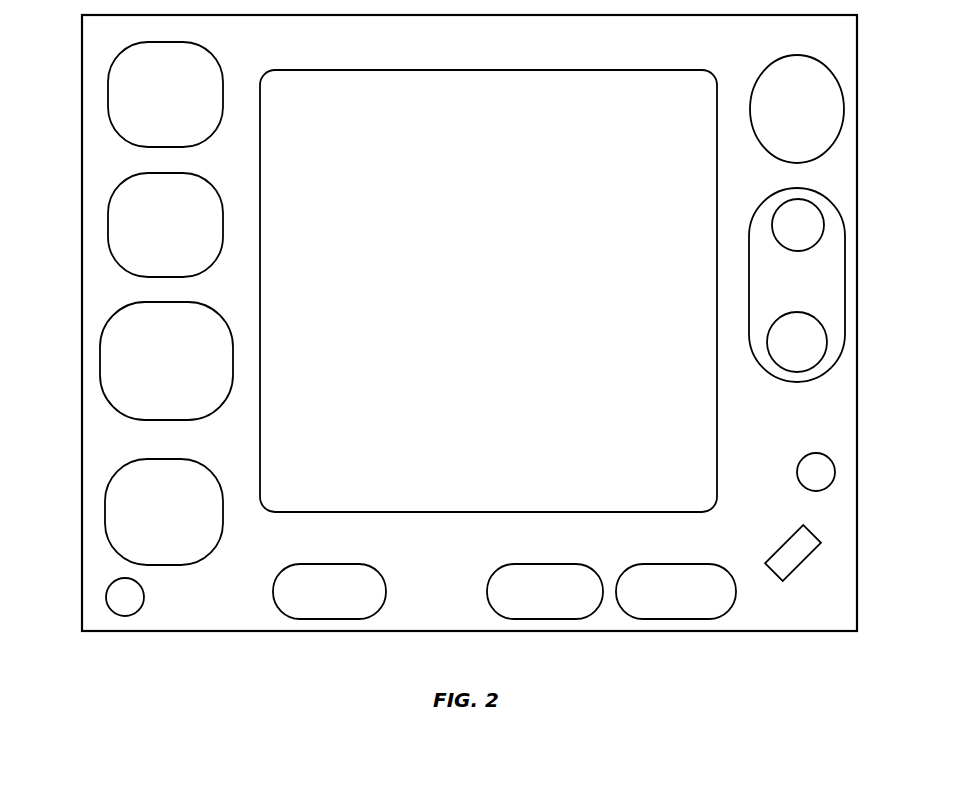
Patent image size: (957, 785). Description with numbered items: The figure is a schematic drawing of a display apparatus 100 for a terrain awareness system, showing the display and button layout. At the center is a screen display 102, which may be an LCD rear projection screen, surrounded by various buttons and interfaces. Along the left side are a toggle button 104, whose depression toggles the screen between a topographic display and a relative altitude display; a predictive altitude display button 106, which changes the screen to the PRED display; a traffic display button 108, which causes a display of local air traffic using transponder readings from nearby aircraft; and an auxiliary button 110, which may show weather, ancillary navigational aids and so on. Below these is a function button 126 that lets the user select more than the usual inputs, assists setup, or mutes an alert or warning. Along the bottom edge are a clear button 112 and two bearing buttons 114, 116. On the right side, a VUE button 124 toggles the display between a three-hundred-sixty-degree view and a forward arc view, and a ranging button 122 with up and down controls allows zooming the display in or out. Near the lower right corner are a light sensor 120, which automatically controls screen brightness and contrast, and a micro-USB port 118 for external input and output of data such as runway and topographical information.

The display apparatus 100 is at (800, 632).
The screen display 102 is at (488, 70).
The toggle button 104 is at (108, 92).
The predictive altitude display button 106 is at (108, 222).
The traffic display button 108 is at (100, 360).
The auxiliary button 110 is at (105, 508).
The clear button 112 is at (329, 620).
The bearing 1 button 114 is at (545, 620).
The bearing 2 button 116 is at (676, 620).
The micro-USB port 118 is at (812, 535).
The light sensor 120 is at (835, 470).
The ranging button 122 is at (845, 283).
The VUE button 124 is at (845, 107).
The function button 126 is at (106, 597).